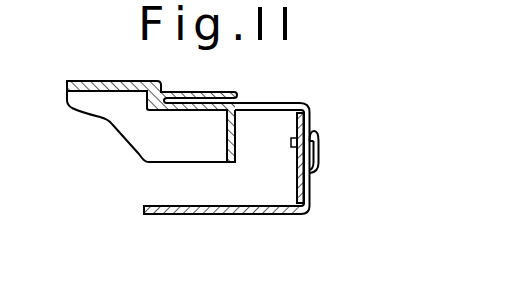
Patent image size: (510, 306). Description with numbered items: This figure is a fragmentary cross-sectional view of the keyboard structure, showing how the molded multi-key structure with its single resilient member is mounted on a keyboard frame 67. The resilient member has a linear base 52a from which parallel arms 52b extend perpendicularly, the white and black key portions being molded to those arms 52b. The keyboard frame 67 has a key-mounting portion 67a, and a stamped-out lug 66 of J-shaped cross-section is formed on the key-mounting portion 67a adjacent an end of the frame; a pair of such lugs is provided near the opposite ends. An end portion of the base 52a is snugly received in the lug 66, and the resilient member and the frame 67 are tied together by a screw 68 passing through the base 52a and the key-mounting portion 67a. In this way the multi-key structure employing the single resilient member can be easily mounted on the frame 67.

The base 52a is at (312, 122).
The arm 52b is at (272, 102).
The stamped-out lug 66 is at (318, 174).
The keyboard frame 67 is at (245, 215).
The key-mounting portion 67a is at (297, 178).
The screw 68 is at (319, 143).